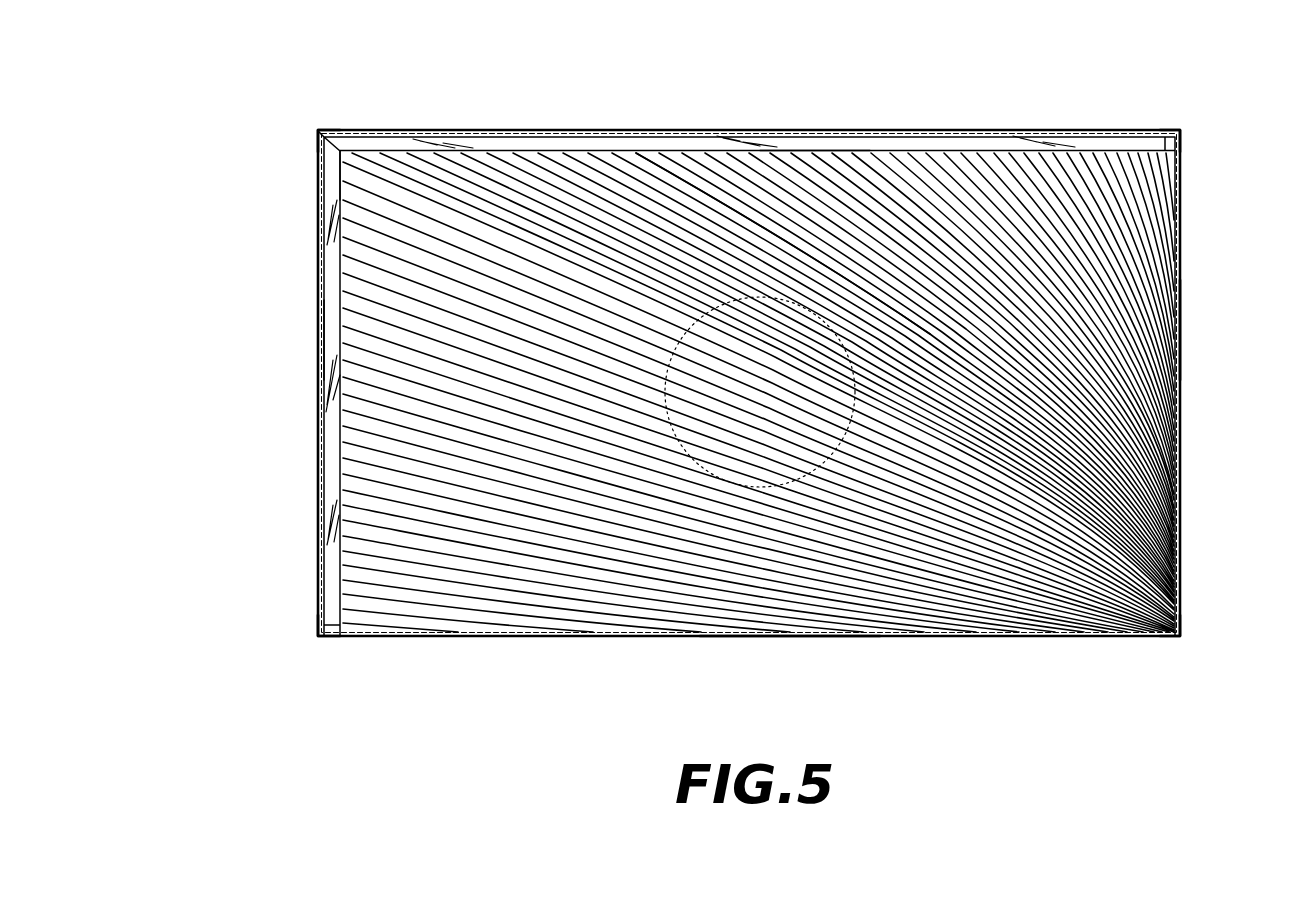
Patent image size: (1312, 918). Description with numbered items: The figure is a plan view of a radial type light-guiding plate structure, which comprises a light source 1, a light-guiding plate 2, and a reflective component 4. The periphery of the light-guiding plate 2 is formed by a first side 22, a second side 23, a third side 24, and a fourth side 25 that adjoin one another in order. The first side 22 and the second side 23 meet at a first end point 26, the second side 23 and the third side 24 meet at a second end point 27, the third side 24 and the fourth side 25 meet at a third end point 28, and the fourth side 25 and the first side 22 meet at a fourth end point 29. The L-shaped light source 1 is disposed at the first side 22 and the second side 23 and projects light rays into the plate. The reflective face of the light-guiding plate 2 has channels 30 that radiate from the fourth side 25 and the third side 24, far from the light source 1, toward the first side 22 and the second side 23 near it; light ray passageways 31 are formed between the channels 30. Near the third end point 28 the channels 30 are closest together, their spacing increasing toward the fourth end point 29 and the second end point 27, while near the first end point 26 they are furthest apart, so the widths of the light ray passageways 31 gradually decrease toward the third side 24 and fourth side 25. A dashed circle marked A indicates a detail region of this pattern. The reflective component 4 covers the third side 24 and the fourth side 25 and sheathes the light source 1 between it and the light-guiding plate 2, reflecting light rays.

The light source 1 is at (505, 147).
The light-guiding plate 2 is at (340, 187).
The reflective component 4 is at (318, 540).
The first side 22 is at (345, 336).
The second side 23 is at (815, 153).
The third side 24 is at (1183, 334).
The fourth side 25 is at (788, 640).
The first end point 26 is at (318, 133).
The second end point 27 is at (1183, 140).
The third end point 28 is at (1182, 638).
The fourth end point 29 is at (336, 638).
The channels 30 is at (608, 203).
The light ray passageways 31 is at (642, 170).
The detail region A is at (753, 297).